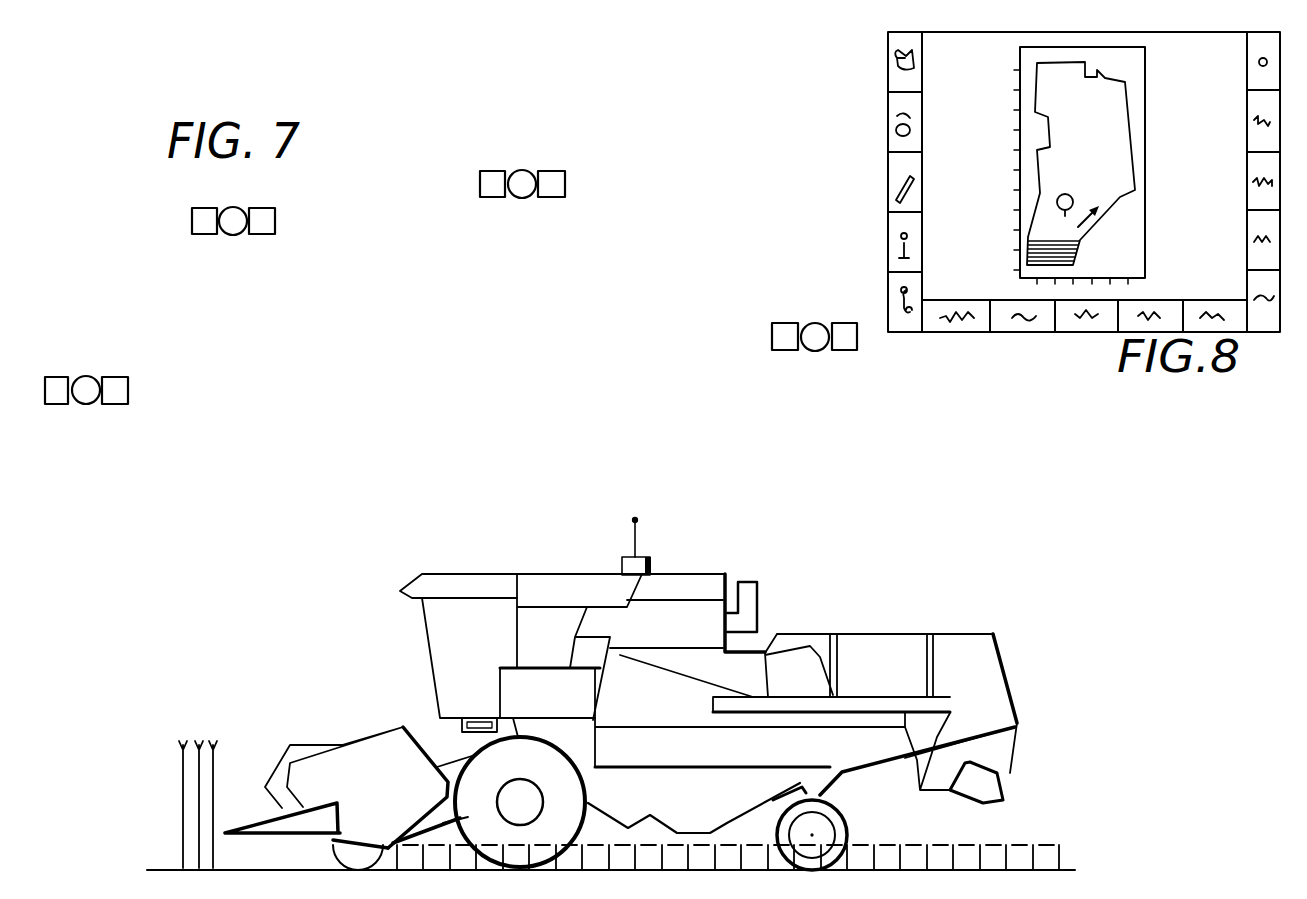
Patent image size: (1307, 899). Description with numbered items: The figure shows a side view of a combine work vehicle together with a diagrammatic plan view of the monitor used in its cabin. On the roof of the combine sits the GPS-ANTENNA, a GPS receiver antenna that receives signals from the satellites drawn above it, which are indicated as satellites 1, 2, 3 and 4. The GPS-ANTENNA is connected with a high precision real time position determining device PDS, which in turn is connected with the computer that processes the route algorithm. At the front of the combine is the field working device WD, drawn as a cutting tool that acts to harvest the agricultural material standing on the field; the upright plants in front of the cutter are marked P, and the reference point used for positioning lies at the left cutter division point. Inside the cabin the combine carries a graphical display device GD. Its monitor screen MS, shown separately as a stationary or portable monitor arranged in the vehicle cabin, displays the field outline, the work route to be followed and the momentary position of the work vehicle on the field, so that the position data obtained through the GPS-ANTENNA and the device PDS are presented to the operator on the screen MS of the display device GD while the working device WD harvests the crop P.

In FIG. 7, the GPS satellite 1 is at (413, 362).
In FIG. 7, the GPS satellite 2 is at (748, 417).
In FIG. 7, the GPS satellite 3 is at (340, 447).
In FIG. 7, the GPS satellite 4 is at (557, 344).
In FIG. 7, the GPS antenna GPS-ANTENNA is at (630, 536).
In FIG. 7, the position determining device PDS is at (652, 566).
In FIG. 7, the graphical display device GD is at (483, 678).
In FIG. 8, the graphical display device GD is at (880, 137).
In FIG. 7, the field working device WD is at (268, 758).
In FIG. 7, the plants / crop P is at (235, 830).
In FIG. 8, the monitor screen MS is at (1219, 180).